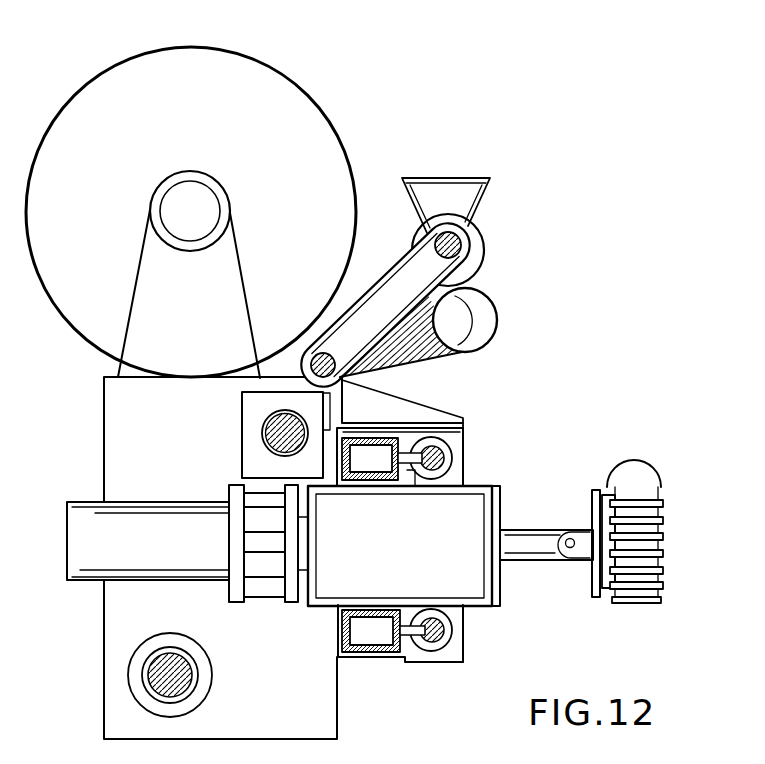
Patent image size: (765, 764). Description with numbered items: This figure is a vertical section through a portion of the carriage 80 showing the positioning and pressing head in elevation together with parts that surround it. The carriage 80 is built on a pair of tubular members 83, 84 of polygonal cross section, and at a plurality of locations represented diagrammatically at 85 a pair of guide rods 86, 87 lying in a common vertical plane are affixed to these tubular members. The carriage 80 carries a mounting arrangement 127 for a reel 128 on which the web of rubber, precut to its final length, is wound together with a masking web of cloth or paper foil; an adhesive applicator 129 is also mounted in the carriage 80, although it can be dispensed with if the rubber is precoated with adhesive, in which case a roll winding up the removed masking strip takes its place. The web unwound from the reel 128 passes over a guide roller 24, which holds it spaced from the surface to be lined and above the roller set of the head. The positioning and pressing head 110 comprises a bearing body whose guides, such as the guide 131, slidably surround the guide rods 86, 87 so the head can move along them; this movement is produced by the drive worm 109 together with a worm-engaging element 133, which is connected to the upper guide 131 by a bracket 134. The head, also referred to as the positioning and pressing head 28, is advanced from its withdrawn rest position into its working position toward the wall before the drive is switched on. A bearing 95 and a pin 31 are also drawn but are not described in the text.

The guide roller 24 is at (485, 335).
The positioning and pressing head 28 is at (658, 460).
The pin 31 is at (570, 538).
The carriage 80 is at (97, 602).
The tubular member 83 is at (380, 438).
The tubular member 84 is at (363, 652).
The affixing locations 85 is at (407, 450).
The guide rod 86 is at (443, 460).
The guide rod 87 is at (443, 648).
The bearing 95 is at (143, 677).
The drive worm 109 is at (272, 438).
The positioning and pressing head 110 is at (227, 583).
The mounting arrangement 127 is at (130, 290).
The reel 128 is at (105, 66).
The adhesive applicator 129 is at (488, 243).
The guide 131 is at (455, 438).
The worm-engaging element 133 is at (257, 413).
The bracket 134 is at (378, 405).